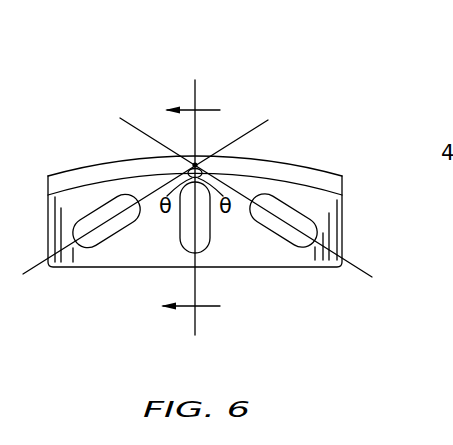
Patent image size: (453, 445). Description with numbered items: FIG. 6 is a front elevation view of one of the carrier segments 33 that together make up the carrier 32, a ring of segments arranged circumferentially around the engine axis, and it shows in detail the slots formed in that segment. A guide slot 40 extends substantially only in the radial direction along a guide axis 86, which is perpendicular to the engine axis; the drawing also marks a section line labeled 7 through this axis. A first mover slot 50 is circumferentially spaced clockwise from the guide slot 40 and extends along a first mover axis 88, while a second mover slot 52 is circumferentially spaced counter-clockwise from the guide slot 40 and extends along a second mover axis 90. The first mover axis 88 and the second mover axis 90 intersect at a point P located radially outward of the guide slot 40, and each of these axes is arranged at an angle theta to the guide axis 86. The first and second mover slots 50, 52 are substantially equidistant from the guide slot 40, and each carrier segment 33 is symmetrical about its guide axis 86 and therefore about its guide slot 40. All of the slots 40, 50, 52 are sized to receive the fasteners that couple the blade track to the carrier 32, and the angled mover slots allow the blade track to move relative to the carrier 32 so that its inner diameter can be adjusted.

The carrier 32 is at (330, 42).
The carrier segment 33 is at (311, 110).
The guide axis 86 is at (197, 323).
The section line 7- 7 is at (201, 208).
The first mover axis 88 is at (363, 268).
The second mover axis 90 is at (42, 263).
The point P is at (184, 161).
The guide slot 40 is at (214, 227).
The first mover slot 50 is at (295, 193).
The second mover slot 52 is at (99, 192).